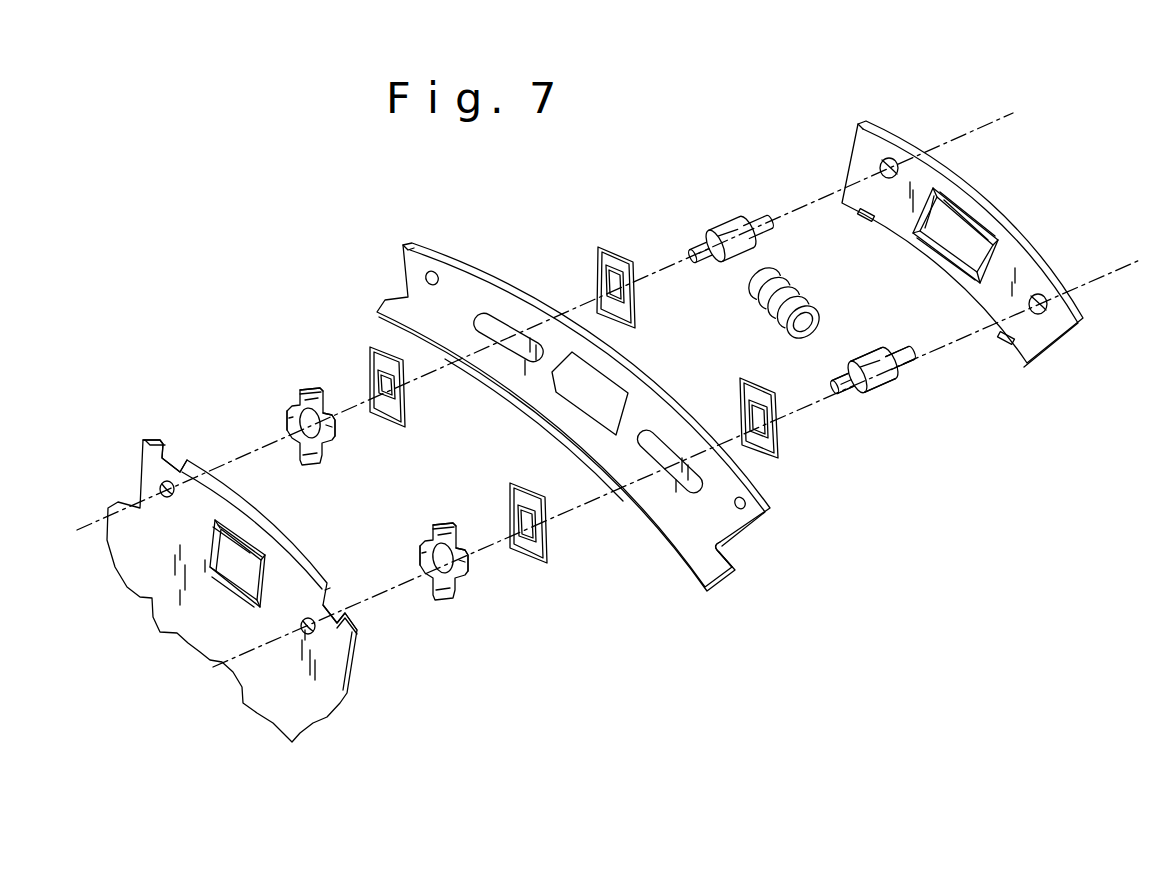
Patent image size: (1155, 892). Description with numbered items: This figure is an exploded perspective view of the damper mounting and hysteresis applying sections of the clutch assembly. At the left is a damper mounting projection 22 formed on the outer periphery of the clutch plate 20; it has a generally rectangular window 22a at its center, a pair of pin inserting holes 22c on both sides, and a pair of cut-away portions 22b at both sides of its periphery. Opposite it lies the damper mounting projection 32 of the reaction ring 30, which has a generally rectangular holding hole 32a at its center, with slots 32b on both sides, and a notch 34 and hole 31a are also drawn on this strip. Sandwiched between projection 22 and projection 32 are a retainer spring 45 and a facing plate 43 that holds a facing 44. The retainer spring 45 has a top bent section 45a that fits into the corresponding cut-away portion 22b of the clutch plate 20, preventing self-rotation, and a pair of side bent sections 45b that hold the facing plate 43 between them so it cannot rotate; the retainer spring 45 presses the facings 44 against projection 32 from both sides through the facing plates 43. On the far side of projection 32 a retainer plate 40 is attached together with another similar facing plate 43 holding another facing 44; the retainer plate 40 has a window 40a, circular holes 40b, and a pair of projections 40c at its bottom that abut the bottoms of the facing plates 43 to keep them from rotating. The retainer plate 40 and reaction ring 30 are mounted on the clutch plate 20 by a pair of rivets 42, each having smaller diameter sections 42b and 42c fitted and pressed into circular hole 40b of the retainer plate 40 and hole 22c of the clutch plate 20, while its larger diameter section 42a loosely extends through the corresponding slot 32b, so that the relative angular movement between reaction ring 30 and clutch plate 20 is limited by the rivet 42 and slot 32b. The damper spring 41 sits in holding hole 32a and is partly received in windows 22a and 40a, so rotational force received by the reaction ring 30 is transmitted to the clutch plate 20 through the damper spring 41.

The clutch plate 20 is at (245, 572).
The damper mounting projection 22 is at (332, 668).
The window 22a is at (258, 580).
The cut-away portion 22b is at (155, 442).
The pin inserting hole 22c is at (161, 485).
The reaction ring 30 is at (607, 408).
The hole 31a is at (432, 271).
The damper mounting projection 32 is at (710, 526).
The holding hole 32a is at (598, 408).
The slot 32b is at (502, 328).
The notch 34 is at (686, 551).
The retainer plate 40 is at (988, 258).
The window 40a is at (968, 237).
The circular hole 40b is at (891, 158).
The projection 40c is at (866, 223).
The damper spring 41 is at (821, 312).
The rivet 42 is at (726, 228).
The larger diameter section 42a is at (869, 364).
The smaller diameter section 42b is at (908, 368).
The smaller diameter section 42c is at (840, 396).
The facing plate 43 is at (395, 424).
The facing 44 is at (398, 397).
The retainer spring 45 is at (325, 458).
The top bent section 45a is at (309, 391).
The side bent section 45b is at (336, 430).